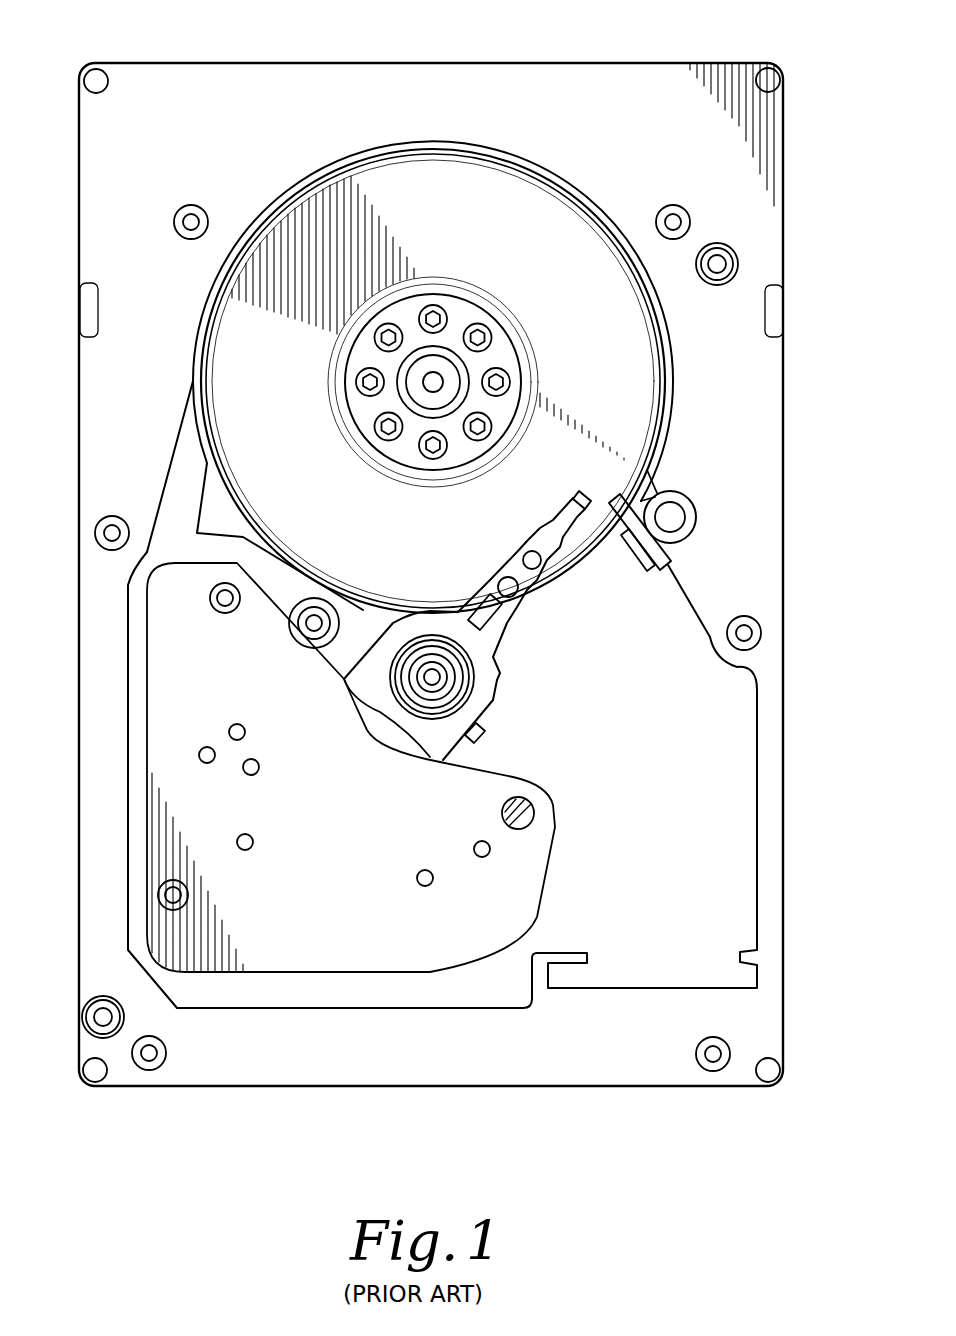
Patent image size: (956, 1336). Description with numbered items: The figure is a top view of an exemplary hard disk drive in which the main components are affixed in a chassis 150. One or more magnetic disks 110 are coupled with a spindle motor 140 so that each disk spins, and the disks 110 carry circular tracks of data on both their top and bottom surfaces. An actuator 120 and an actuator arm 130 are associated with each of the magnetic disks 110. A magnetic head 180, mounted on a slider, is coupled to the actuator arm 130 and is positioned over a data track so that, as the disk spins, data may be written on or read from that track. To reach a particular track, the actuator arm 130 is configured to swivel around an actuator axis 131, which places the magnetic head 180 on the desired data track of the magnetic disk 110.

The chassis 150 is at (200, 63).
The magnetic disk 110 is at (523, 207).
The spindle motor 140 is at (448, 383).
The actuator arm 130 is at (512, 568).
The actuator axis 131 is at (432, 677).
The magnetic head 180 is at (577, 497).
The actuator 120 is at (533, 870).